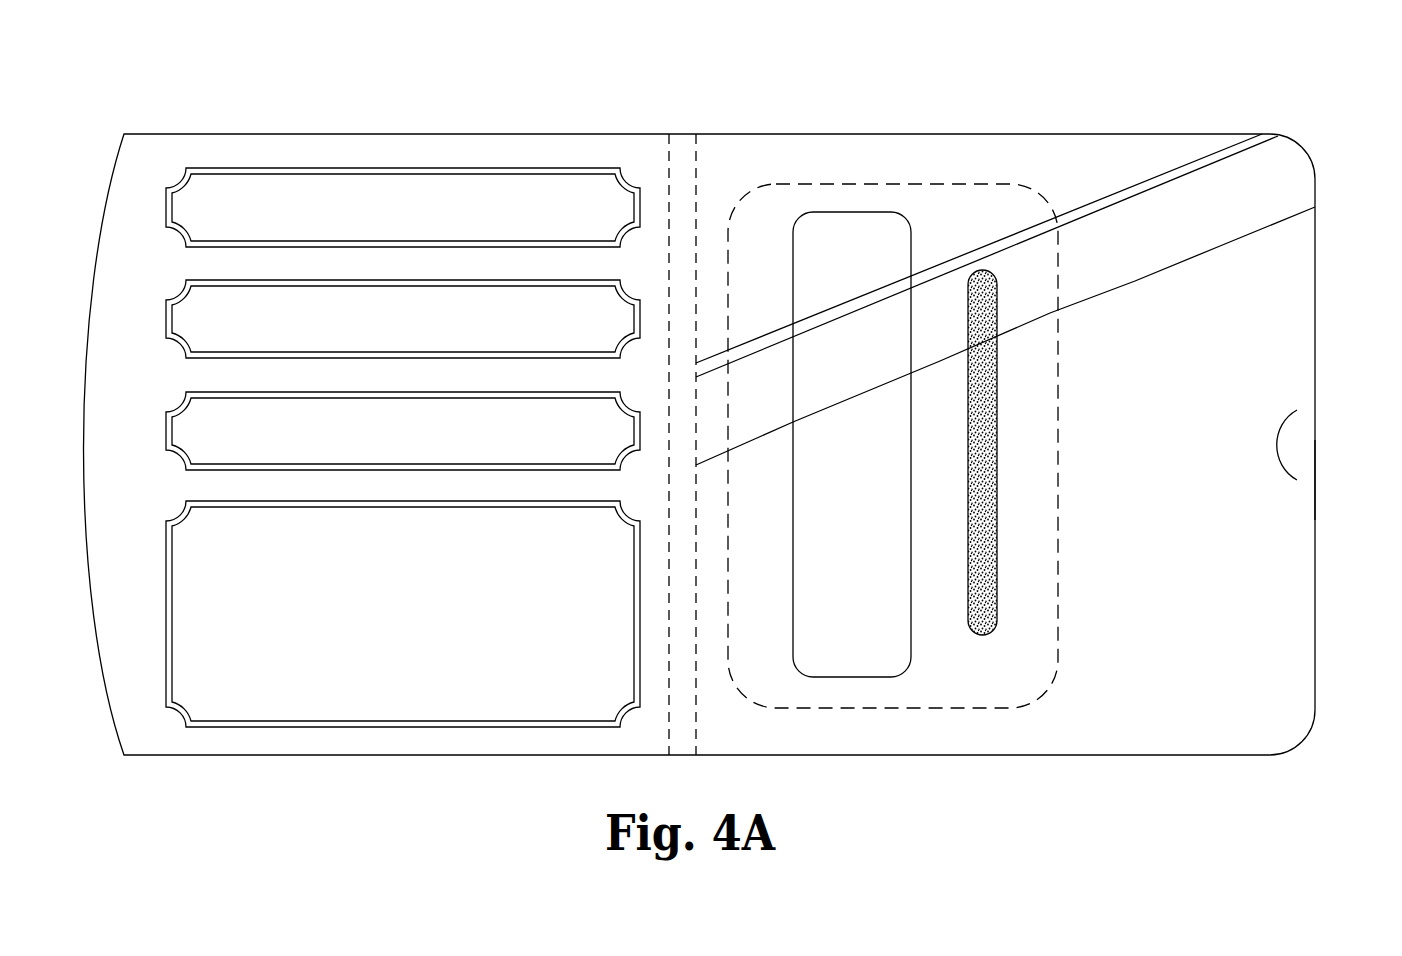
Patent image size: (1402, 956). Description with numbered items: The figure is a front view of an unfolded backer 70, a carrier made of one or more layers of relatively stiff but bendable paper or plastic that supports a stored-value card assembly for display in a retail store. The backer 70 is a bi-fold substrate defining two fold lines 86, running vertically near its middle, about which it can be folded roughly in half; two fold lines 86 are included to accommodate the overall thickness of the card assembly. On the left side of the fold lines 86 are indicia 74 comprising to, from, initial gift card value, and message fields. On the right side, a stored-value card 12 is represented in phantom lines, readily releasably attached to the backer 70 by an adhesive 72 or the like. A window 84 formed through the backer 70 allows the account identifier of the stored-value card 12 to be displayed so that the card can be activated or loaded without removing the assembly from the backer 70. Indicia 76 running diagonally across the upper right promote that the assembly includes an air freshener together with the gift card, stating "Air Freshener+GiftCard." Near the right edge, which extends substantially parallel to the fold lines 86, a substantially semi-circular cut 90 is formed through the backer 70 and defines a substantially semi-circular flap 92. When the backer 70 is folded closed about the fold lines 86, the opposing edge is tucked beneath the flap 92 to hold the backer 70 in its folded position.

The backer 70 is at (1212, 77).
The indicia 74 is at (365, 152).
The fold lines 86 is at (670, 158).
The stored-value card 12 is at (930, 183).
The adhesive 72 is at (977, 270).
The indicia 76 is at (1240, 243).
The window 84 is at (853, 677).
The flap 92 is at (1287, 444).
The cut 90 is at (1278, 460).